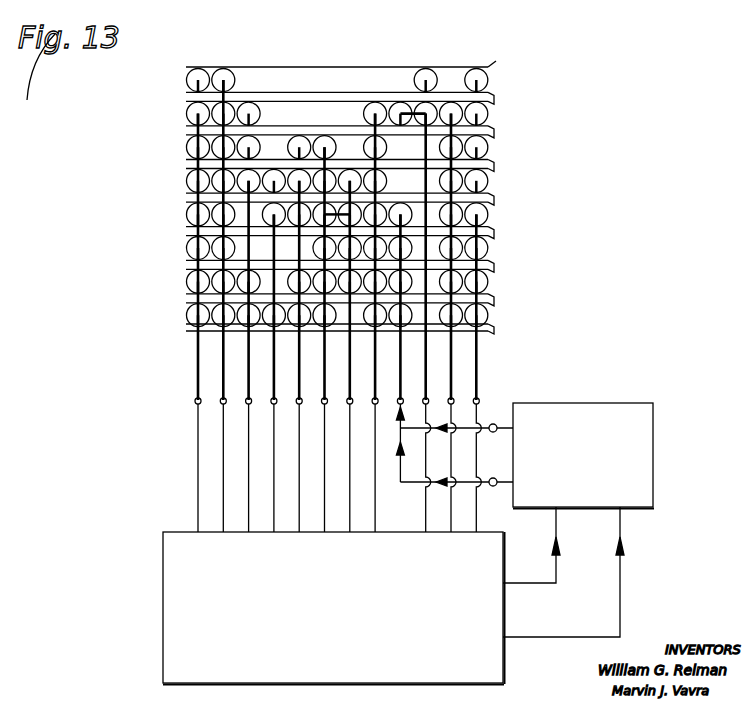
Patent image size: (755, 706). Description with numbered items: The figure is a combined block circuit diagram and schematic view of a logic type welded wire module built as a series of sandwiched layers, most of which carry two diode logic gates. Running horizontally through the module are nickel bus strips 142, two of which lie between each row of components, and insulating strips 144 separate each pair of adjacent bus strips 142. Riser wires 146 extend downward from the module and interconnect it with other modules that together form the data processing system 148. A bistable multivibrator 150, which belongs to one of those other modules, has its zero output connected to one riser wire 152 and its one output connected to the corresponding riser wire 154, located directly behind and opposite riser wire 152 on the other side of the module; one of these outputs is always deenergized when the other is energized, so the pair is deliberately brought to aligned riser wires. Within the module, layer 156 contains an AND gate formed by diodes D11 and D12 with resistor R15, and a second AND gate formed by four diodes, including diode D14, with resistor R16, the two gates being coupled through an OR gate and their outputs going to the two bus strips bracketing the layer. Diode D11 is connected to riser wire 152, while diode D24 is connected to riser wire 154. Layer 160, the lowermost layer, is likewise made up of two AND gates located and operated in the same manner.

The nickel bus strips 142 is at (489, 138).
The insulating strips 144 is at (186, 196).
The resistor R15 is at (188, 208).
The resistor R16 is at (188, 230).
The diode D11 is at (418, 197).
The diode D12 is at (490, 221).
The diode D14 is at (488, 200).
The diode D24 is at (410, 325).
The riser wires 146 is at (248, 357).
The data processing system 148 is at (187, 546).
The bistable multivibrator 150 is at (638, 418).
The riser wire 152 is at (403, 373).
The riser wire 154 is at (402, 467).
The layer 156 is at (512, 216).
The layer 160 is at (508, 318).